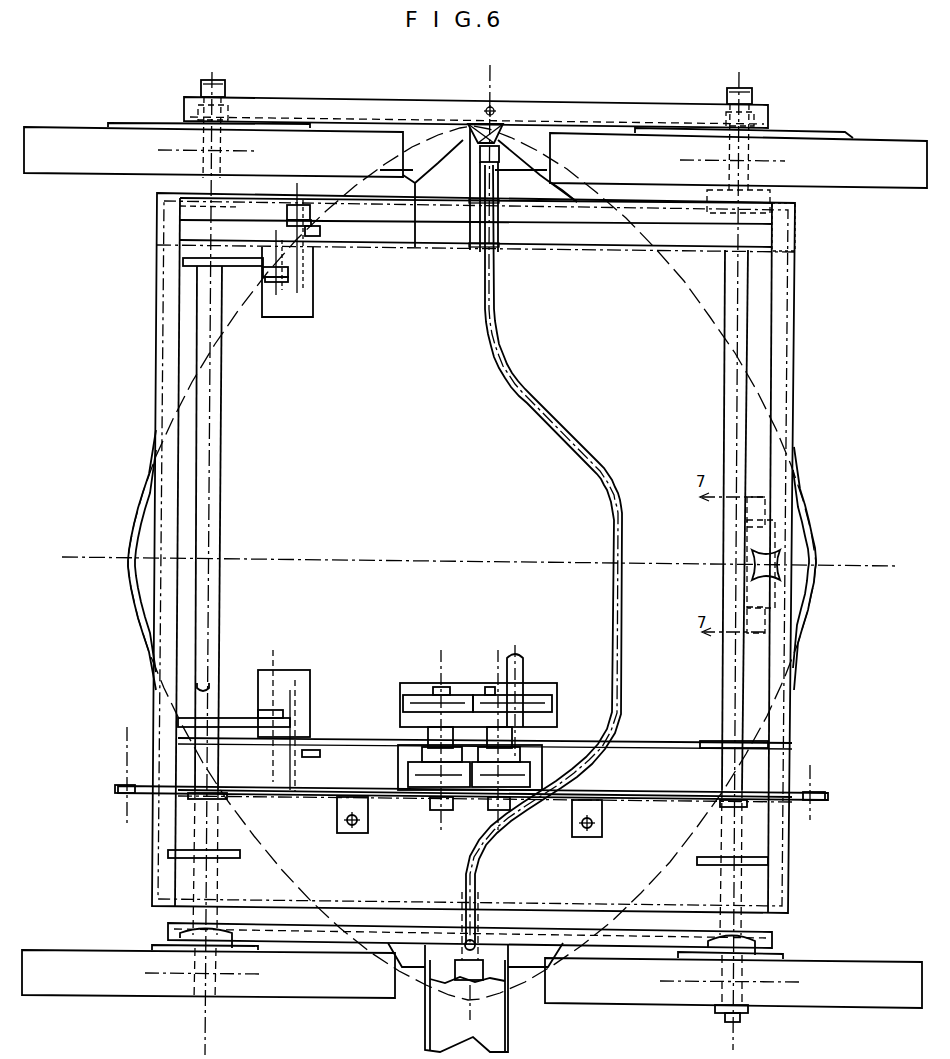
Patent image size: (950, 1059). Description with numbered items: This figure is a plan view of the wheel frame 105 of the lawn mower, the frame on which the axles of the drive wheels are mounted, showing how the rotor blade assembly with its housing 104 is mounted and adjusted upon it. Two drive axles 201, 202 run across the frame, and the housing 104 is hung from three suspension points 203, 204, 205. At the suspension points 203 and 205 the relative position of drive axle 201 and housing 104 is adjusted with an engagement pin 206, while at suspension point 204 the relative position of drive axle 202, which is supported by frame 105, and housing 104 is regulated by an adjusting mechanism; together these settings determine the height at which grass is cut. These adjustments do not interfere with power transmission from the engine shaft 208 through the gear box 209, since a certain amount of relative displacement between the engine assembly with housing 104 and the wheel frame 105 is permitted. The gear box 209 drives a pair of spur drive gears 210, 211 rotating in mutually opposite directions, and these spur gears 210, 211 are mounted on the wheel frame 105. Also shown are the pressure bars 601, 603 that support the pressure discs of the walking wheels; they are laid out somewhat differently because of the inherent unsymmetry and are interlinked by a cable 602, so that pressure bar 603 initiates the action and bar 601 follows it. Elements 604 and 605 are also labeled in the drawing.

The housing 104 is at (132, 507).
The wheel frame 105 is at (155, 302).
The drive axle 201 is at (221, 447).
The drive axle 202 is at (725, 368).
The suspension point 203 is at (315, 255).
The suspension point 204 is at (758, 559).
The suspension point 205 is at (310, 702).
The engagement pin 206 is at (298, 725).
The engine shaft 208 is at (522, 667).
The gear box 209 is at (400, 683).
The spur drive gear 210 is at (412, 777).
The spur drive gear 211 is at (523, 780).
The pressure bar 601 is at (184, 105).
The cable 602 is at (577, 457).
The pressure bar 603 is at (168, 930).
The top gusset 604 is at (473, 128).
The top nut 605 is at (494, 132).